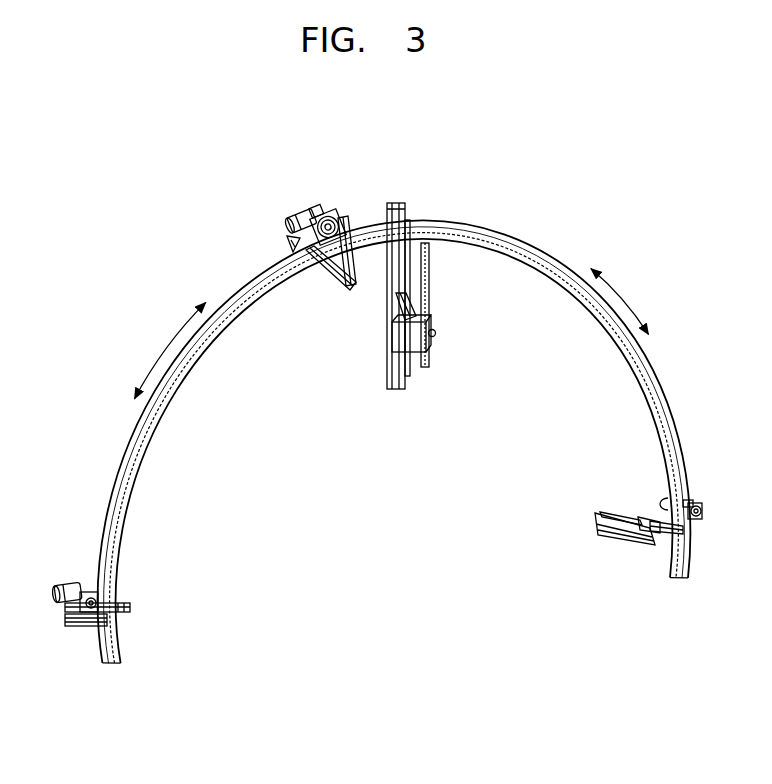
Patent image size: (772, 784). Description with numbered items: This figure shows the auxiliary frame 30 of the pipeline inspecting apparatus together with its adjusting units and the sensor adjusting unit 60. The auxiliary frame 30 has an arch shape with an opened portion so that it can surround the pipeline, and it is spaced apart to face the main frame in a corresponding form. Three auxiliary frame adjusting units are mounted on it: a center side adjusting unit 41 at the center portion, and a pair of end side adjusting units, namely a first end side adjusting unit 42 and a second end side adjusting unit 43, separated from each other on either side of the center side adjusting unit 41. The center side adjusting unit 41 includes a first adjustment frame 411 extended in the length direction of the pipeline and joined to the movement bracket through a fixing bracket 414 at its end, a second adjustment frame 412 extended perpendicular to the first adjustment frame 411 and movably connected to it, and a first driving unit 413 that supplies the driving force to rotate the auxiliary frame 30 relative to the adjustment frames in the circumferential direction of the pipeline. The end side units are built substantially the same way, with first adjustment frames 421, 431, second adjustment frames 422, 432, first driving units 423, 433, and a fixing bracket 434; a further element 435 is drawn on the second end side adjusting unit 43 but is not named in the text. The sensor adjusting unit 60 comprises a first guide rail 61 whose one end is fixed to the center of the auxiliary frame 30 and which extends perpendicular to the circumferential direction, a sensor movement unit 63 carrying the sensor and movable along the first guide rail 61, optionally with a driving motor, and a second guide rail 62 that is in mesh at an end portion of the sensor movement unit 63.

The auxiliary frame 30 is at (538, 239).
The center side adjusting unit 41 is at (311, 233).
The first adjustment frame 411 is at (326, 284).
The second adjustment frame 412 is at (346, 220).
The first driving unit 413 is at (294, 213).
The fixing bracket 414 is at (287, 246).
The first end side adjusting unit 42 is at (117, 639).
The first adjustment frame 421 is at (100, 610).
The second adjustment frame 422 is at (66, 627).
The first driving unit 423 is at (70, 584).
The second end side adjusting unit 43 is at (649, 529).
The first adjustment frame 431 is at (613, 538).
The second adjustment frame 432 is at (655, 545).
The first driving unit 433 is at (697, 504).
The fixing bracket 434 is at (624, 512).
The slide block 435 is at (650, 520).
The sensor adjusting unit 60 is at (442, 326).
The first guide rail 61 is at (395, 389).
The second guide rail 62 is at (429, 364).
The sensor movement unit 63 is at (398, 335).